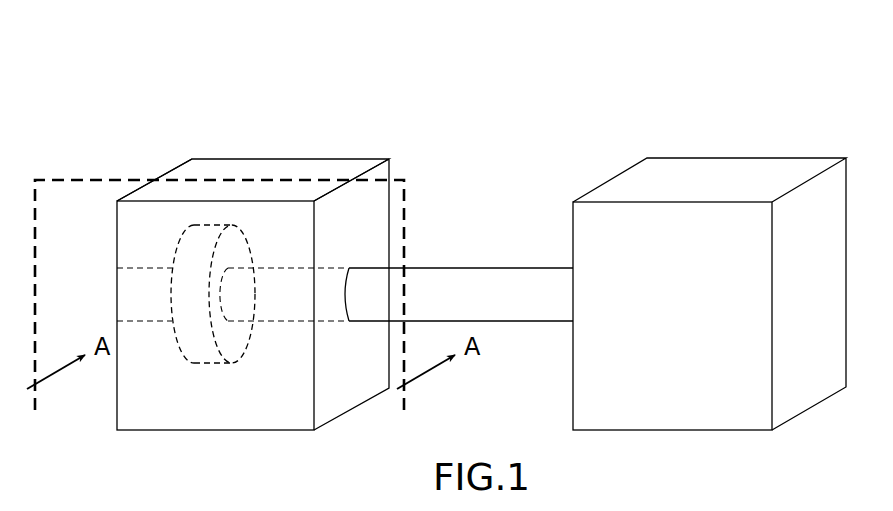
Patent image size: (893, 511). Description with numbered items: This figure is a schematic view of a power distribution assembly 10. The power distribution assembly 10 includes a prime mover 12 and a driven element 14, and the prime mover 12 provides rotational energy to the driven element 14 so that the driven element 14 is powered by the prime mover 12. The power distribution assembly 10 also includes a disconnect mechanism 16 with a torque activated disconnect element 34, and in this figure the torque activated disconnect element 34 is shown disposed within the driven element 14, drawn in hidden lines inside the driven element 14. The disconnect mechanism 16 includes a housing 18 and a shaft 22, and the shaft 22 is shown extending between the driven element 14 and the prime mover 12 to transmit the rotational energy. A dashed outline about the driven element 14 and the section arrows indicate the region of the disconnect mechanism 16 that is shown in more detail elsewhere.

The power distribution assembly 10 is at (136, 122).
The prime mover 12 is at (801, 140).
The driven element 14 is at (266, 134).
The disconnect mechanism 16 is at (216, 132).
The housing 18 is at (368, 129).
The shaft 22 is at (434, 280).
The torque activated disconnect element 34 is at (230, 247).